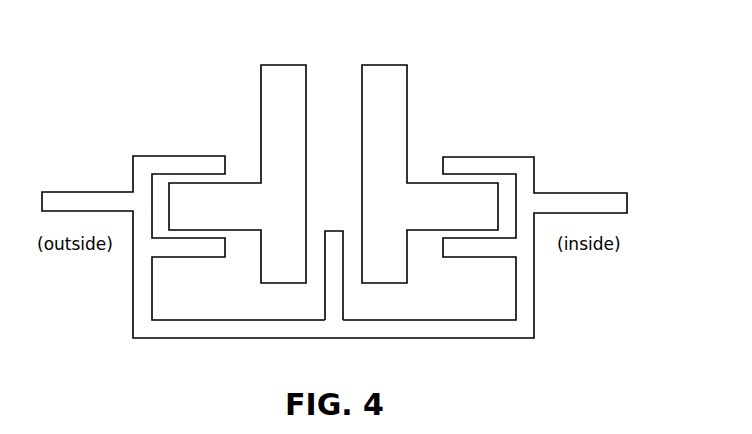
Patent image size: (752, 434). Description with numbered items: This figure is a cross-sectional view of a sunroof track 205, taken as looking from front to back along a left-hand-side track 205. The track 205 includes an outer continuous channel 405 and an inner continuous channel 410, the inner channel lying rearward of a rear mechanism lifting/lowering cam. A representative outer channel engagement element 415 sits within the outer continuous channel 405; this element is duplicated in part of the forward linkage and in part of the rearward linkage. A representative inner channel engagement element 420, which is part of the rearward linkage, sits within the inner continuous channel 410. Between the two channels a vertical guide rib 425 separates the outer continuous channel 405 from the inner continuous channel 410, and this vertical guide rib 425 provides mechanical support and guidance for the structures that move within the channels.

The sunroof track 205 is at (339, 194).
The outer continuous channel 405 is at (160, 192).
The inner continuous channel 410 is at (507, 193).
The outer channel engagement element 415 is at (261, 100).
The inner channel engagement element 420 is at (407, 100).
The vertical guide rib 425 is at (333, 293).